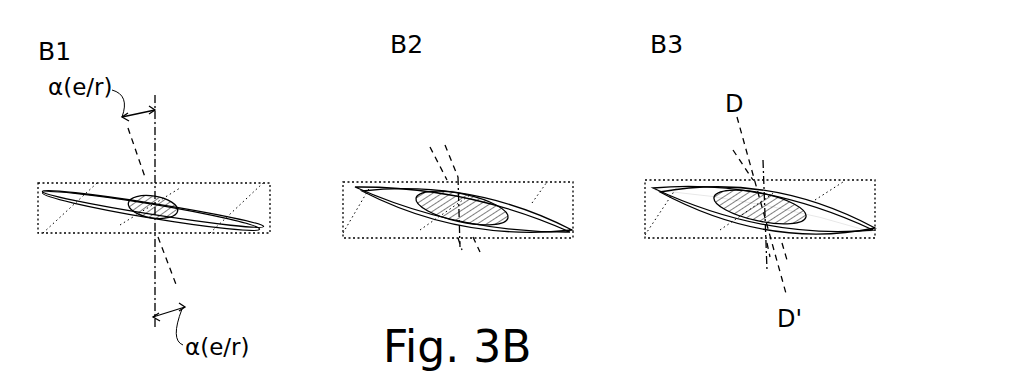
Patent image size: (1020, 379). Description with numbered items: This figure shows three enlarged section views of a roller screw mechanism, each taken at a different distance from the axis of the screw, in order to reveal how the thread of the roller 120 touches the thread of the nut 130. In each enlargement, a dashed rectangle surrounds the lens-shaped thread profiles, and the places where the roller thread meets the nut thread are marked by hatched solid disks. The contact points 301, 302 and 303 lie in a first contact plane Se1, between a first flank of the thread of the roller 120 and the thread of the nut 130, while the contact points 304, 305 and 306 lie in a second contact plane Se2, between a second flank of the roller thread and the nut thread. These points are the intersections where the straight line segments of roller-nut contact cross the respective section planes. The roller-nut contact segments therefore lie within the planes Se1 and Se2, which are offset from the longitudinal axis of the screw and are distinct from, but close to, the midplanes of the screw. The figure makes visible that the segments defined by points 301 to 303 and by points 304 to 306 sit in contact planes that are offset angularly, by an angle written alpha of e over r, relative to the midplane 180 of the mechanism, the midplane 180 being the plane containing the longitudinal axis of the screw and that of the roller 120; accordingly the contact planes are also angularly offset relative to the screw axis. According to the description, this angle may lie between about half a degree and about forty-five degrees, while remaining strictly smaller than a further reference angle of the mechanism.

The midplane 180 is at (157, 125).
The roller 120 is at (768, 187).
The nut 130 is at (822, 190).
The contact point 301 is at (153, 190).
The contact point 302 is at (460, 183).
The contact point 303 is at (755, 183).
The contact point 304 is at (153, 215).
The contact point 305 is at (460, 223).
The contact point 306 is at (758, 217).
The first contact plane Se1 is at (180, 263).
The second contact plane Se2 is at (182, 295).